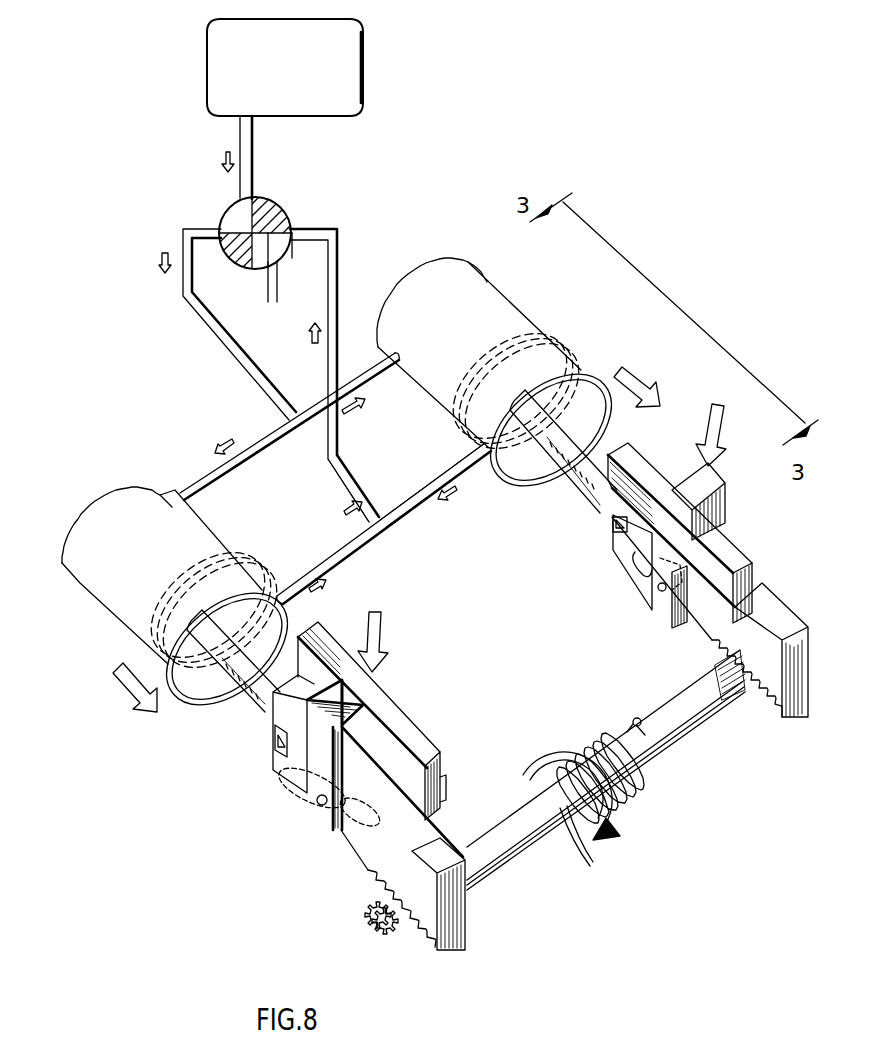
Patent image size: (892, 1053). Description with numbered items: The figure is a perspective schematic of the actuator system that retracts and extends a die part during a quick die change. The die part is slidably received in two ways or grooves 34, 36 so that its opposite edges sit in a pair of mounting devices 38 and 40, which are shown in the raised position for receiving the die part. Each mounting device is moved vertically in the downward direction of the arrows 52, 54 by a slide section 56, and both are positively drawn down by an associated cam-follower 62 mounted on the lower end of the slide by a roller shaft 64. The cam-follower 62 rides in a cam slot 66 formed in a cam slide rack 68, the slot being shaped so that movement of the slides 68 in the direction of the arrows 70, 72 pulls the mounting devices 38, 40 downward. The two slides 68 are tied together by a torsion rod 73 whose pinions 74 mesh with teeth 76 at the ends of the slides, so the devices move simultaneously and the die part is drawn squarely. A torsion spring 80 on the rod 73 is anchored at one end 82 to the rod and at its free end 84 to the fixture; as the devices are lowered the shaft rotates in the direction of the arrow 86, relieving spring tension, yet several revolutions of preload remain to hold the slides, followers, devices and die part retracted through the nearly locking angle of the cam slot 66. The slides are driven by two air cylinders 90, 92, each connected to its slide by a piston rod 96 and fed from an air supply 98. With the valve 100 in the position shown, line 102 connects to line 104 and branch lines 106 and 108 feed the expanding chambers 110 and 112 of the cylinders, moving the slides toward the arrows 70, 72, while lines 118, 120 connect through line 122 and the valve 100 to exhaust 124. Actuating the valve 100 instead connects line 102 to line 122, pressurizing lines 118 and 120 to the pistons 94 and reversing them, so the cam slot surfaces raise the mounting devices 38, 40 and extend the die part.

The air supply 98 is at (364, 72).
The line 102 is at (250, 162).
The valve 100 is at (232, 217).
The exhaust 124 is at (268, 292).
The line 104 is at (248, 372).
The branch line 106 is at (247, 455).
The branch line 108 is at (367, 387).
The expanding chamber 112 is at (439, 394).
The line 118 is at (364, 538).
The line 120 is at (425, 502).
The line 122 is at (367, 502).
The air cylinder 92 is at (513, 317).
The piston 94 is at (562, 360).
The piston rod 96 is at (598, 482).
The air cylinder 90 is at (212, 542).
The expanding chamber 110 is at (115, 613).
The arrow 70 is at (140, 708).
The arrow 72 is at (643, 384).
The arrow 52 is at (387, 645).
The arrow 54 is at (723, 427).
The mounting device 40 is at (650, 468).
The mounting device 38 is at (413, 732).
The slide section 56 is at (718, 508).
The way 36 is at (650, 510).
The way 34 is at (440, 782).
The cam slide rack 68 is at (795, 705).
The pinion 74 is at (738, 697).
The teeth 76 is at (770, 710).
The torsion rod 73 is at (523, 852).
The torsion spring 80 is at (600, 745).
The end 82 is at (637, 718).
The free end 84 is at (587, 866).
The arrow 86 is at (615, 835).
The cam-follower 62 is at (335, 826).
The roller shaft 64 is at (318, 812).
The cam slot 66 is at (350, 847).